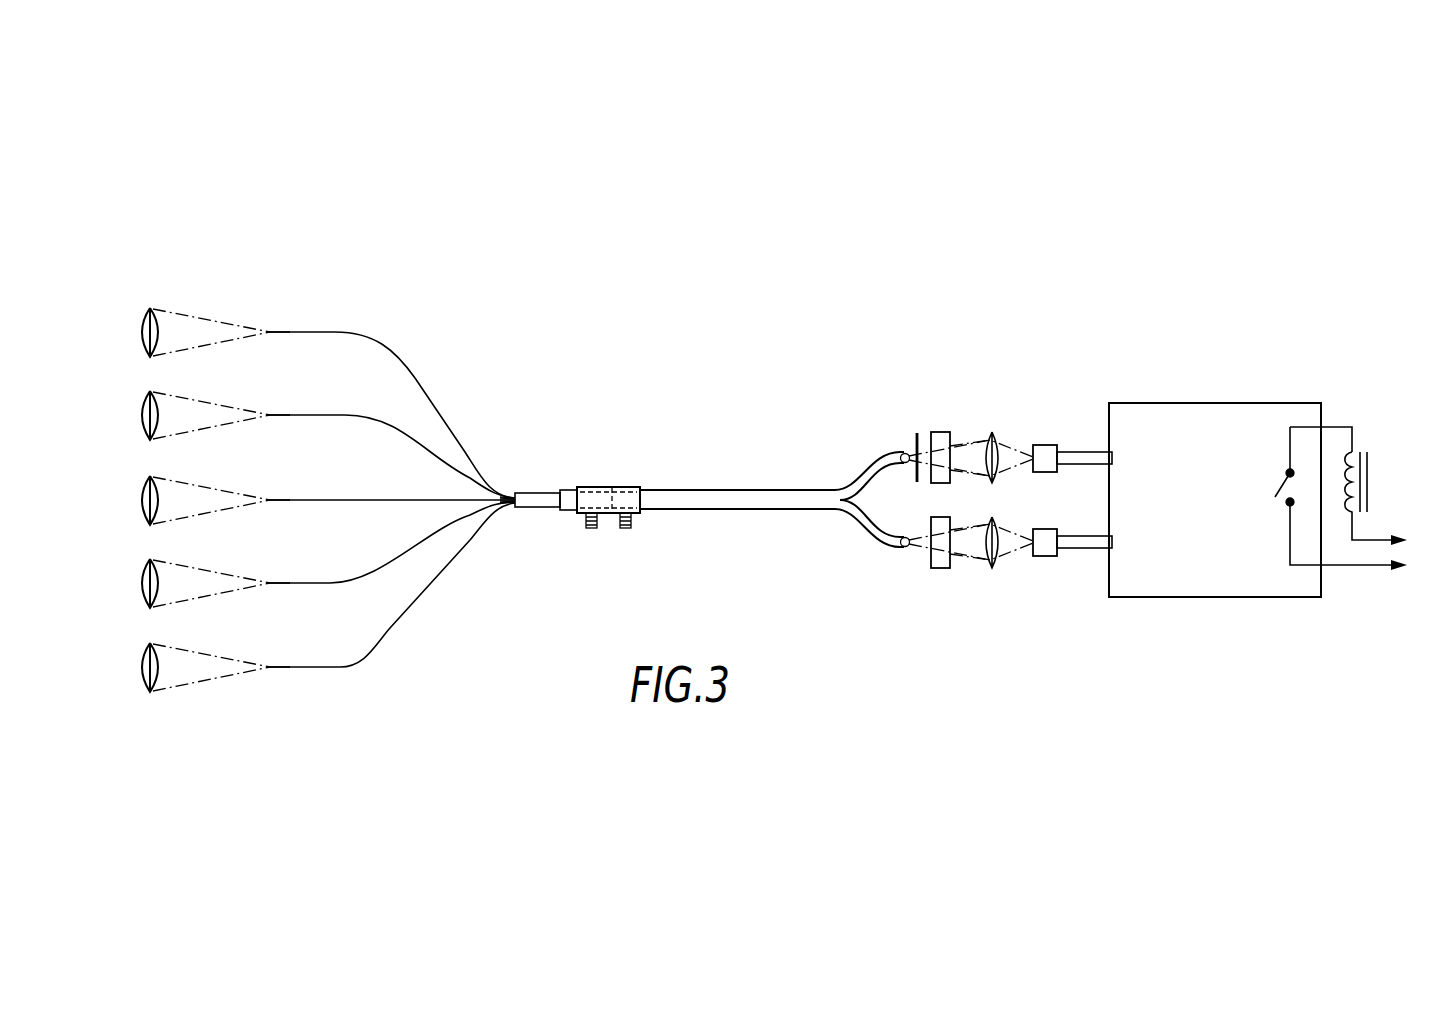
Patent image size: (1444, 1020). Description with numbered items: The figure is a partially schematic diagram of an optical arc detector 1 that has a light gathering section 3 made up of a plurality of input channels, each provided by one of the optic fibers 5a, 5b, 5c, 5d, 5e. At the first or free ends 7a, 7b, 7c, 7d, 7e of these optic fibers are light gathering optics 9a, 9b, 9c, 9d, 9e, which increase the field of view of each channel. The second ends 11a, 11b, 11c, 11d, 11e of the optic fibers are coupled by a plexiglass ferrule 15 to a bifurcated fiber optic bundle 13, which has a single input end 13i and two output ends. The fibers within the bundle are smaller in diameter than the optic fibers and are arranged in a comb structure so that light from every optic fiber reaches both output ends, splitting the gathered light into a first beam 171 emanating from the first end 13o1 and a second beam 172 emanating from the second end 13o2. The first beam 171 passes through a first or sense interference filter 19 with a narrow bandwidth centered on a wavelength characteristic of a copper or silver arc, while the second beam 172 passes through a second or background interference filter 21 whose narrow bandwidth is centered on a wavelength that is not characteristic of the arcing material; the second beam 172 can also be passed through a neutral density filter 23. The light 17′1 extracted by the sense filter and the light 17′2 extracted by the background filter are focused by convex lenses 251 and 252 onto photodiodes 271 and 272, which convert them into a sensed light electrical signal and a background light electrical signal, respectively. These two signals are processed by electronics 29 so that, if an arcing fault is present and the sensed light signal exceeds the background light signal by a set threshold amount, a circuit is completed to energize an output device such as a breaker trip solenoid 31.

The optical arc detector 1 is at (714, 590).
The light gathering section 3 is at (746, 350).
The optic fiber 5a is at (405, 370).
The optic fiber 5b is at (359, 415).
The optic fiber 5c is at (377, 498).
The optic fiber 5d is at (369, 571).
The optic fiber 5e is at (360, 659).
The first or free end 7a is at (272, 332).
The first or free end 7b is at (272, 415).
The first or free end 7c is at (272, 500).
The first or free end 7d is at (272, 583).
The first or free end 7e is at (272, 667).
The light gathering optics 9a is at (142, 330).
The light gathering optics 9b is at (142, 413).
The light gathering optics 9c is at (142, 498).
The light gathering optics 9d is at (142, 581).
The light gathering optics 9e is at (142, 665).
The second end 11a is at (512, 496).
The second end 11b is at (520, 496).
The second end 11c is at (512, 505).
The second end 11d is at (520, 505).
The second end 11e is at (515, 507).
The bifurcated fiber optic bundle 13 is at (740, 469).
The single input end 13i is at (646, 490).
The first end 13o1 is at (878, 547).
The second end 13o2 is at (868, 457).
The plexiglass ferrule 15 is at (612, 487).
The first beam 171 is at (905, 538).
The second beam 172 is at (905, 453).
The light extracted by the sense filter 17′1 is at (960, 553).
The light extracted by the background filter 17′2 is at (965, 455).
The first or sense interference filter 19 is at (938, 570).
The second or background interference filter 21 is at (940, 432).
The neutral density filter 23 is at (915, 433).
The convex lens 251 is at (997, 565).
The convex lens 252 is at (997, 437).
The photodiode 271 is at (1045, 529).
The photodiode 272 is at (1045, 446).
The electronics 29 is at (1172, 403).
The breaker trip solenoid 31 is at (1352, 432).